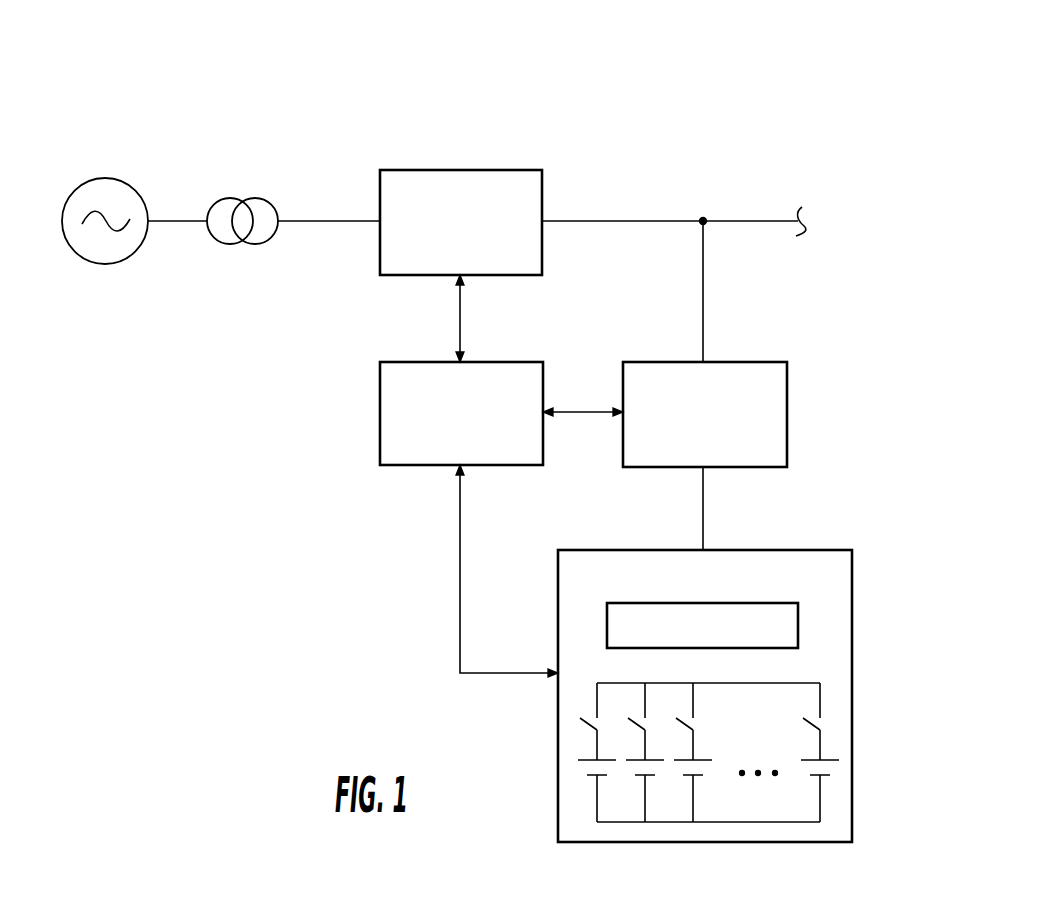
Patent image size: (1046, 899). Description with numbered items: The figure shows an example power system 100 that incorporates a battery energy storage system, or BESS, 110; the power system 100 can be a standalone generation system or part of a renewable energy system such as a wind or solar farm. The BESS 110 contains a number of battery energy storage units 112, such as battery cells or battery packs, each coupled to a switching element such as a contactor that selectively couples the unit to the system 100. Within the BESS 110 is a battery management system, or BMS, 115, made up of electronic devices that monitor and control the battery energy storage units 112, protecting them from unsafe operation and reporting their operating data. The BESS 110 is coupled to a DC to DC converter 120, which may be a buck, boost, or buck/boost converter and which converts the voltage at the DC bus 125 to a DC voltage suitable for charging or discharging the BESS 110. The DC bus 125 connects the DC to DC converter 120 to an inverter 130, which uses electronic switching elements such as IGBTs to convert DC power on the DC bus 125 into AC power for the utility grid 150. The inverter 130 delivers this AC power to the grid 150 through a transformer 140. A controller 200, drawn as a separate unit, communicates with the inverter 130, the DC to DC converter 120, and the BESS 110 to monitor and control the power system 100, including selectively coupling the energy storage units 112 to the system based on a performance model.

The power system 100 is at (800, 88).
The battery energy storage system 110 is at (852, 573).
The battery energy storage units 112 is at (710, 822).
The battery management system 115 is at (798, 627).
The DC to DC converter 120 is at (787, 425).
The DC bus 125 is at (703, 218).
The inverter 130 is at (465, 170).
The transformer 140 is at (273, 203).
The utility grid 150 is at (138, 188).
The controller 200 is at (398, 465).